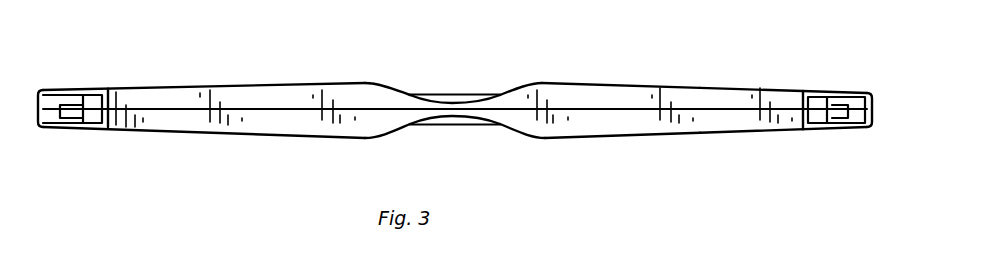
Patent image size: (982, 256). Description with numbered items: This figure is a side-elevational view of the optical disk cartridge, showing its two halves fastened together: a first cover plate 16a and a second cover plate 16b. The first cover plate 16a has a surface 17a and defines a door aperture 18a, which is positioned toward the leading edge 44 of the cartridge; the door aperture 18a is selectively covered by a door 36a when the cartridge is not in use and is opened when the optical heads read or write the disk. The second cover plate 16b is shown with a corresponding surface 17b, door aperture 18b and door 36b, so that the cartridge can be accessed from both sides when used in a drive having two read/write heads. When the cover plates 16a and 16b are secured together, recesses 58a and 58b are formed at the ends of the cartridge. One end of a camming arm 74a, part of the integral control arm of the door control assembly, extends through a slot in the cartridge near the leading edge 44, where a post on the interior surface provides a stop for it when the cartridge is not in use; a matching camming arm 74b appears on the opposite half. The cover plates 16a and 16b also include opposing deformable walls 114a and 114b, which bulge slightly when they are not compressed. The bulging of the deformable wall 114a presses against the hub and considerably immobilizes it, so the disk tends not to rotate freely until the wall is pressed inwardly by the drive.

The leading edge 44 is at (158, 147).
The first half or cover plate 16a is at (668, 61).
The second cover plate 16b is at (681, 161).
The surface 17a is at (555, 83).
The lower tapered section 17b is at (572, 139).
The door aperture 18a is at (390, 88).
The lower tapered section 18b is at (393, 132).
The door 36a is at (450, 97).
The lower recess 36b is at (455, 121).
The recess 58a is at (47, 90).
The recess 58b is at (867, 97).
The camming arm 74a is at (66, 134).
The right latch 74b is at (843, 134).
The deformable wall 114a is at (730, 81).
The deformable wall 114b is at (745, 142).